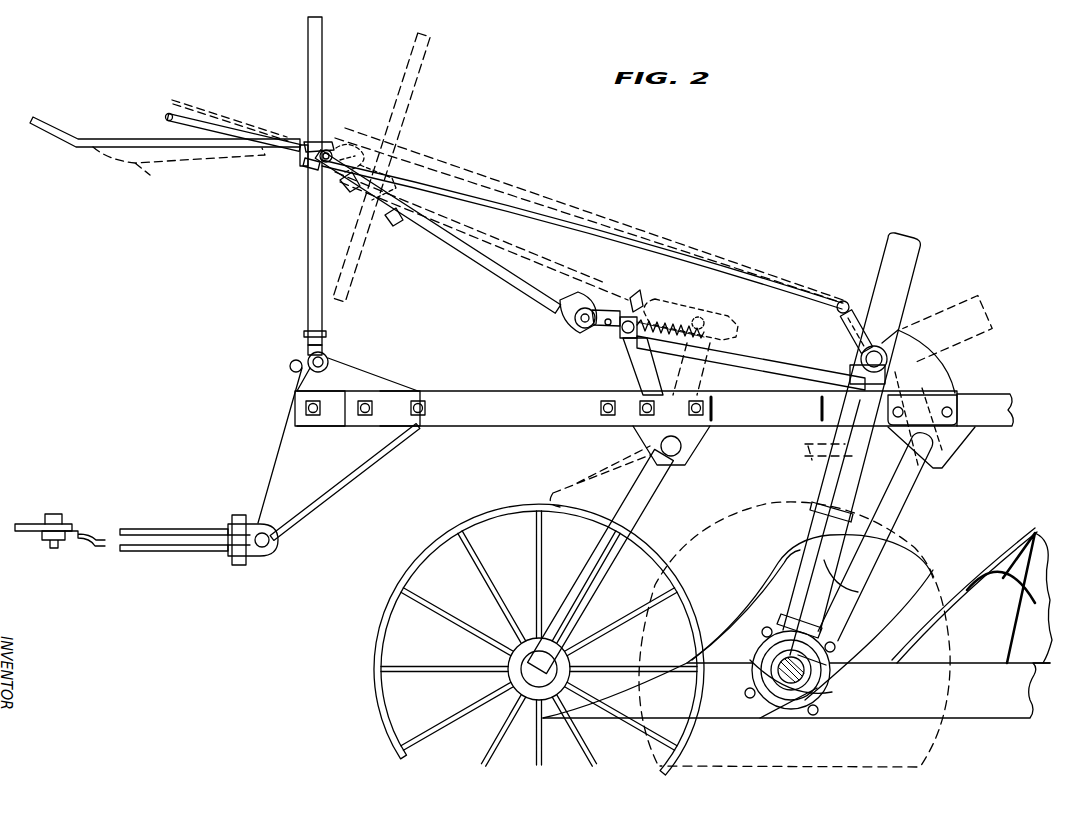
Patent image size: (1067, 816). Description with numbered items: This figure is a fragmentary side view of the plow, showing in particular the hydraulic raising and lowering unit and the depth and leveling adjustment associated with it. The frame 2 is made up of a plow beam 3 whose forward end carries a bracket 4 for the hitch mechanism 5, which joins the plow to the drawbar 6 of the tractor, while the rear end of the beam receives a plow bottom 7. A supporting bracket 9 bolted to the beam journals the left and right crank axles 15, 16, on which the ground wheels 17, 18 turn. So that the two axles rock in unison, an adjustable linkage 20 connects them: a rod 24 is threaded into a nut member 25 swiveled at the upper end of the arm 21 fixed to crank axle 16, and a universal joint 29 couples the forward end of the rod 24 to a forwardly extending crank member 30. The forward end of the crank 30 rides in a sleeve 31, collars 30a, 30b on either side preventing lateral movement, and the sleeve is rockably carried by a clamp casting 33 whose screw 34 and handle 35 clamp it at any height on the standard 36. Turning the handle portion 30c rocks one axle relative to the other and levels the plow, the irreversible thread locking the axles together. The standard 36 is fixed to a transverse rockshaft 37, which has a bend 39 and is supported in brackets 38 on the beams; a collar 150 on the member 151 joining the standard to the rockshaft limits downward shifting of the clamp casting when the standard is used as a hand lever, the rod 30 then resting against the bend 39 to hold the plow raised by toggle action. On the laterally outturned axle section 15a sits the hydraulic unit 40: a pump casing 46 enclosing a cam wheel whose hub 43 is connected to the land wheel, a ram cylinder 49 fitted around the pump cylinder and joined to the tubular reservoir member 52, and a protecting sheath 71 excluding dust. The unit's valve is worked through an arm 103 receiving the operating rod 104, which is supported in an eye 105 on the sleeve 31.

The frame 2 is at (985, 388).
The plow beam 3 is at (478, 412).
The bracket 4 is at (333, 475).
The hitch mechanism 5 is at (785, 282).
The drawbar 6 is at (30, 518).
The plow bottom 7 is at (1007, 560).
The supporting bracket 9 is at (648, 434).
The left crank axle 15 is at (912, 508).
The laterally outturned section of crank axle 15a is at (808, 668).
The right crank axle 16 is at (575, 483).
The ground wheel 17 is at (376, 652).
The ground wheel 18 is at (935, 583).
The adjustable linkage 20 is at (722, 312).
The arm 21 is at (620, 364).
The rod 24 is at (752, 350).
The nut member 25 is at (640, 300).
The universal joint 29 is at (565, 330).
The crank member 30 is at (382, 215).
The collar 30a is at (290, 142).
The collar 30b is at (310, 165).
The handle portion 30c is at (92, 148).
The sleeve 31 is at (326, 143).
The clamp casting 33 is at (340, 150).
The screw 34 is at (375, 170).
The handle 35 is at (346, 197).
The standard 36 is at (322, 37).
The transverse shaft 37 is at (326, 352).
The bracket 38 is at (340, 372).
The bend 39 is at (290, 368).
The hydraulic unit 40 is at (795, 532).
The hub 43 is at (815, 692).
The pump casing 46 is at (752, 678).
The ram cylinder 49 is at (830, 471).
The tubular member 52 is at (908, 270).
The protecting sheath 71 is at (826, 565).
The arm 103 is at (846, 318).
The operating rod 104 is at (488, 207).
The eye 105 is at (300, 160).
The collar 150 is at (305, 333).
The member 151 is at (312, 344).